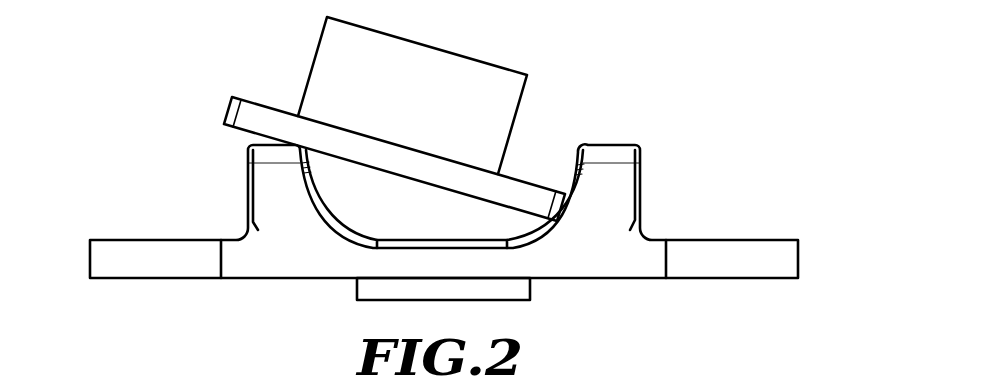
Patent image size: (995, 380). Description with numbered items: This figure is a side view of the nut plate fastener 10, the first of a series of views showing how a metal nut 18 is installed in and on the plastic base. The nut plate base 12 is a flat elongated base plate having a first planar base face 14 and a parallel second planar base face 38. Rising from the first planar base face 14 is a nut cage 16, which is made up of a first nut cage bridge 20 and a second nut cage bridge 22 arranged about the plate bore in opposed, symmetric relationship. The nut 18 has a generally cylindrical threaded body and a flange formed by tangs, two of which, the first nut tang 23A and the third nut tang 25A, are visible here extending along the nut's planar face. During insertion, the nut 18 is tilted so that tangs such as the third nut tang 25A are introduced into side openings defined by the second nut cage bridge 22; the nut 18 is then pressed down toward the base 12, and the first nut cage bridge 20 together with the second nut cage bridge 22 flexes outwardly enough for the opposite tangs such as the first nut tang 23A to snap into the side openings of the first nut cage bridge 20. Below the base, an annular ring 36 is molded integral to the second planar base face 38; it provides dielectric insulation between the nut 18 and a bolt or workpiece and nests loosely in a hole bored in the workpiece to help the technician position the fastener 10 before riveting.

The nut plate fastener 10 is at (748, 66).
The nut plate base 12 is at (127, 284).
The first planar base face 14 is at (738, 240).
The nut cage 16 is at (627, 134).
The nut 18 is at (310, 53).
The first nut cage bridge 20 is at (268, 197).
The second nut cage bridge 22 is at (613, 192).
The first nut tang 23A is at (253, 111).
The third nut tang 25A is at (518, 195).
The annular ring 36 is at (357, 293).
The second planar base face 38 is at (231, 279).